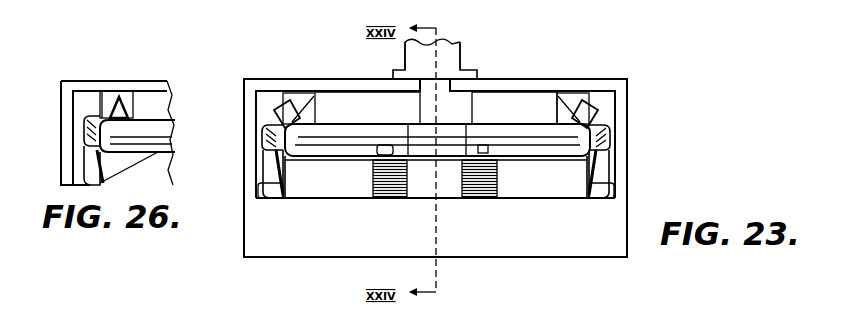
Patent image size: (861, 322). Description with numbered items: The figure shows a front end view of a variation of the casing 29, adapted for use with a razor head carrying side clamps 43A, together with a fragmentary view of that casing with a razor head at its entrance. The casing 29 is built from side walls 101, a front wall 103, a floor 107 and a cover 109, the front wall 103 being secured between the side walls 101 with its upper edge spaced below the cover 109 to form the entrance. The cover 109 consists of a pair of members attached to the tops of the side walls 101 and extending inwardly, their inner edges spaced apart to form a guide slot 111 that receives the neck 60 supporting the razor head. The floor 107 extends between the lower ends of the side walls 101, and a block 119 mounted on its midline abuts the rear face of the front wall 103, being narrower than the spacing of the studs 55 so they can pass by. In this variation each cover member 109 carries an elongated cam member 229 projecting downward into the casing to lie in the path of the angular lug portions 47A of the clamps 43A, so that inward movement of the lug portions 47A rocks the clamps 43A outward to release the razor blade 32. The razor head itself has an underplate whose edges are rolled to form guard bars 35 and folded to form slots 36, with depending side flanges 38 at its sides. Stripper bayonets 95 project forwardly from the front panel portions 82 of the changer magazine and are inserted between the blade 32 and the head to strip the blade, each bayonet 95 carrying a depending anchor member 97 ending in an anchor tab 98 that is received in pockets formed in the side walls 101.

In FIG. 23, the casing 29 is at (563, 52).
In FIG. 23, the razor blade 32 is at (488, 187).
In FIG. 23, the guard bars 35 is at (308, 152).
In FIG. 26, the guard bars 35 is at (157, 132).
In FIG. 23, the slots 36 is at (343, 148).
In FIG. 26, the slots 36 is at (165, 147).
In FIG. 23, the side flanges 38 is at (290, 118).
In FIG. 26, the side flanges 38 is at (103, 123).
In FIG. 23, the side clamps 43A is at (270, 150).
In FIG. 26, the side clamps 43A is at (87, 140).
In FIG. 23, the lug portion 47A is at (308, 120).
In FIG. 26, the lug portion 47A is at (118, 110).
In FIG. 23, the studs 55 is at (408, 148).
In FIG. 23, the neck 60 is at (472, 65).
In FIG. 23, the front panel portions 82 is at (363, 192).
In FIG. 26, the front panel portions 82 is at (112, 160).
In FIG. 23, the stripper bayonets 95 is at (365, 160).
In FIG. 26, the stripper bayonets 95 is at (153, 150).
In FIG. 23, the anchor member 97 is at (263, 195).
In FIG. 26, the anchor member 97 is at (93, 170).
In FIG. 23, the anchor tab 98 is at (260, 207).
In FIG. 23, the side walls 101 is at (246, 243).
In FIG. 26, the side walls 101 is at (72, 98).
In FIG. 23, the front wall 103 is at (503, 230).
In FIG. 23, the floor 107 is at (527, 258).
In FIG. 23, the cover 109 is at (337, 89).
In FIG. 26, the cover 109 is at (95, 85).
In FIG. 23, the guide slot 111 is at (458, 57).
In FIG. 23, the block 119 is at (423, 185).
In FIG. 23, the cam member 229 is at (292, 108).
In FIG. 26, the cam member 229 is at (108, 102).